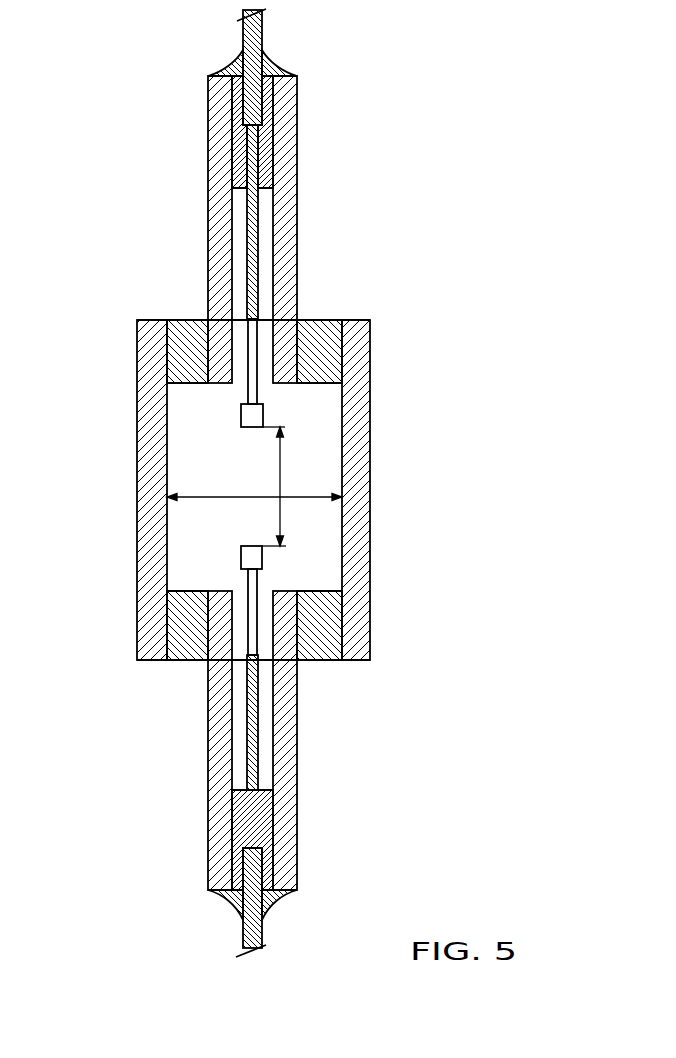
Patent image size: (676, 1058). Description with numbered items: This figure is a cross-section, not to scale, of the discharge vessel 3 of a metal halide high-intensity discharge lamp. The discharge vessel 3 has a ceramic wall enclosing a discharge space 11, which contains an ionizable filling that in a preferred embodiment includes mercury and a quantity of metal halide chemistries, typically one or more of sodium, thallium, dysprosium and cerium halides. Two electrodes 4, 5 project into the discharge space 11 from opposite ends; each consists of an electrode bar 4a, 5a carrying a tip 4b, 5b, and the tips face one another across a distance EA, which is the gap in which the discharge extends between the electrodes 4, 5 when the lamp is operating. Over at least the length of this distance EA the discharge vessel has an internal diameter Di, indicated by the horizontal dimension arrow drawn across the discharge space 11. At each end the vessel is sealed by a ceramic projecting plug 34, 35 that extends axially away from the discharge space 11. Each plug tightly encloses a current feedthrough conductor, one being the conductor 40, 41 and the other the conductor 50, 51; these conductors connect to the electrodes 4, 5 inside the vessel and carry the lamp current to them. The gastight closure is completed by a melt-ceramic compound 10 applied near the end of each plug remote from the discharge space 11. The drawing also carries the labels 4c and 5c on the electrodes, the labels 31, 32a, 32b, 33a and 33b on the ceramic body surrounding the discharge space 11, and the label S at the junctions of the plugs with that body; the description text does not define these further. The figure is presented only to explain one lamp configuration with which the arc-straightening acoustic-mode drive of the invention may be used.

The discharge vessel 3 is at (276, 481).
The electrode 4 is at (271, 629).
The electrode bar 4a is at (253, 645).
The tip 4b is at (234, 539).
The first electrode tip 4c is at (263, 558).
The electrode 5 is at (297, 358).
The electrode bar 5a is at (250, 328).
The tip 5b is at (236, 439).
The second electrode tip 5c is at (263, 410).
The melt-ceramic compound 10 is at (278, 68).
The discharge space 11 is at (198, 485).
The housing ring 31 is at (370, 460).
The lower flange 32a is at (173, 647).
The upper flange 32b is at (173, 336).
The lower end face 33a is at (280, 590).
The upper end face 33b is at (290, 386).
The ceramic projecting plug 34 is at (297, 772).
The ceramic projecting plug 35 is at (297, 146).
The current feedthrough conductor 40 is at (243, 930).
The current feedthrough conductor 41 is at (258, 725).
The current feedthrough conductor 50 is at (262, 23).
The current feedthrough conductor 51 is at (258, 213).
The seal S is at (200, 365).
The internal diameter Di is at (208, 495).
The distance EA is at (281, 462).